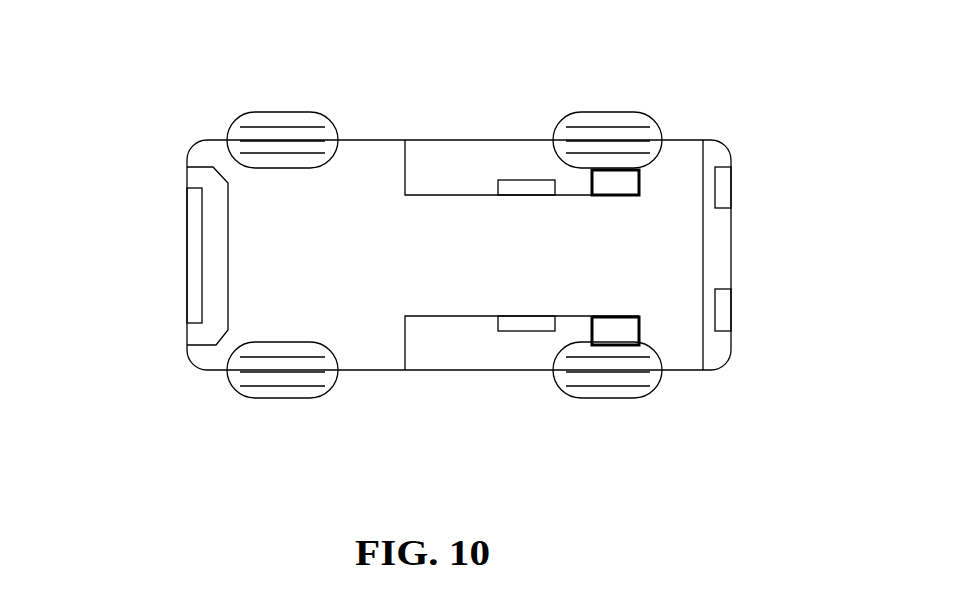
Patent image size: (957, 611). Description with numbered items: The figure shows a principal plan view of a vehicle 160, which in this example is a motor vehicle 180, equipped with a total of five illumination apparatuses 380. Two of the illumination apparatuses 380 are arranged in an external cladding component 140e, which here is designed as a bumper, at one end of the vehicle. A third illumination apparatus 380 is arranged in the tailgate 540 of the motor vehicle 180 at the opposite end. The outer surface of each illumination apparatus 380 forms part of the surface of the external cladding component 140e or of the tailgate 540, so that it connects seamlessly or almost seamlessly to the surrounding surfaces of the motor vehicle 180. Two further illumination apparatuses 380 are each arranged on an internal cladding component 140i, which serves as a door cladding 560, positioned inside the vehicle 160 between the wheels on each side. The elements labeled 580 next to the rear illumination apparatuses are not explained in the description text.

The vehicle 160 is at (160, 130).
The motor vehicle 180 is at (459, 255).
The internal cladding component 140i is at (465, 155).
The door cladding 560 is at (522, 255).
The external cladding component 140e is at (717, 242).
The illumination apparatus 380 is at (527, 185).
The tailgate 540 is at (205, 330).
The sensor unit 580 is at (622, 177).